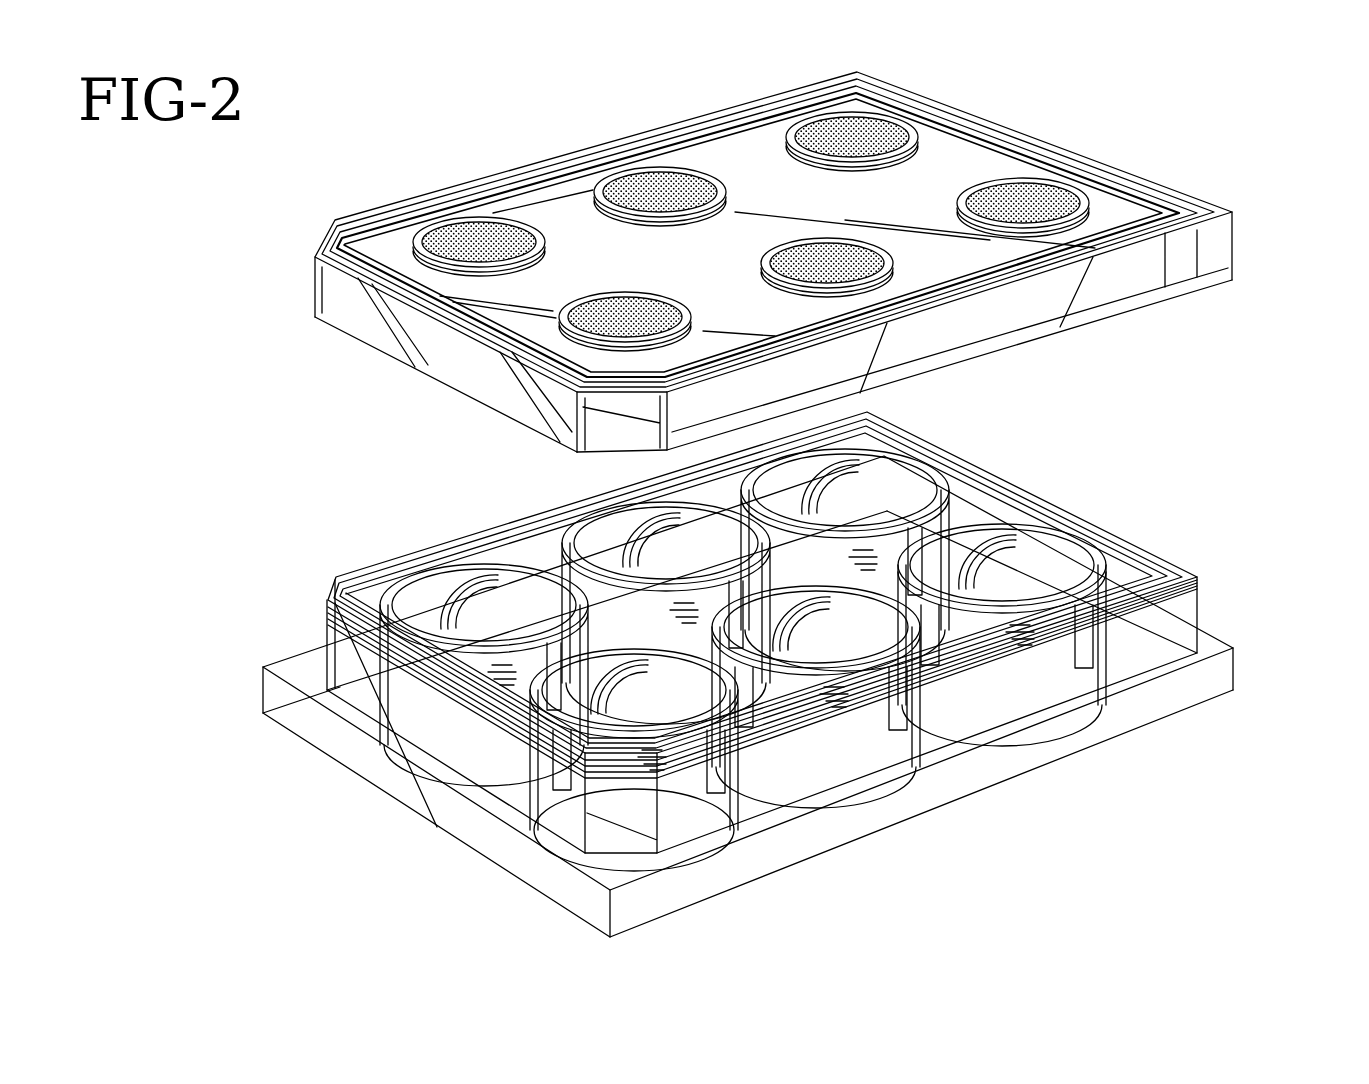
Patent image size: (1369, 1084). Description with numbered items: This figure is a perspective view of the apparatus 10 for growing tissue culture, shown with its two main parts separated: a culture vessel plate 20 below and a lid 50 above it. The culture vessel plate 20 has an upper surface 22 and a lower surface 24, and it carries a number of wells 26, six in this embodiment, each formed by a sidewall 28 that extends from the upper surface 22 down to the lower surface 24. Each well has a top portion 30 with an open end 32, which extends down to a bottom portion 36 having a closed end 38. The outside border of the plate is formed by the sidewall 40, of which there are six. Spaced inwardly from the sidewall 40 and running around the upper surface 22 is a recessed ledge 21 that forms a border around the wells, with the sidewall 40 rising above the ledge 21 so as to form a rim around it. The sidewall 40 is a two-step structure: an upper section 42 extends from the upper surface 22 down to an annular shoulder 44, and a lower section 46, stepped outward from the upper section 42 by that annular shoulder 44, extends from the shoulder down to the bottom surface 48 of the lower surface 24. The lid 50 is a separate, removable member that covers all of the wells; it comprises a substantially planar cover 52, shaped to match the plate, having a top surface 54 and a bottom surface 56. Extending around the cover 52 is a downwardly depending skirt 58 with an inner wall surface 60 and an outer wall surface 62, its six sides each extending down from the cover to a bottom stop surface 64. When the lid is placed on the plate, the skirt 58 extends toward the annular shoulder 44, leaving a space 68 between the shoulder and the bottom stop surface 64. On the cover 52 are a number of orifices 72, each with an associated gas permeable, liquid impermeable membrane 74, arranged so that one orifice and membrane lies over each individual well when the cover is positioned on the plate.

The apparatus 10 is at (179, 340).
The culture vessel plate 20 is at (1180, 608).
The recessed ledge 21 is at (392, 567).
The upper surface 22 is at (1135, 577).
The lower surface 24 is at (792, 847).
The well 26 is at (975, 562).
The sidewall 28 is at (610, 515).
The top portion 30 is at (1073, 537).
The open end 32 is at (1040, 543).
The bottom portion 36 is at (1023, 745).
The closed end 38 is at (1065, 722).
The sidewall 40 is at (517, 790).
The upper section 42 is at (325, 647).
The annular shoulder 44 is at (292, 670).
The lower section 46 is at (302, 717).
The bottom surface 48 is at (327, 757).
The lid 50 is at (1142, 182).
The planar cover 52 is at (967, 162).
The top surface 54 is at (1218, 213).
The bottom surface 56 is at (930, 262).
The skirt 58 is at (465, 360).
The inner wall surface 60 is at (345, 282).
The outer wall surface 62 is at (1103, 284).
The bottom stop surface 64 is at (1197, 290).
The space 68 is at (1235, 217).
The orifice 72 is at (445, 232).
The membrane 74 is at (667, 190).